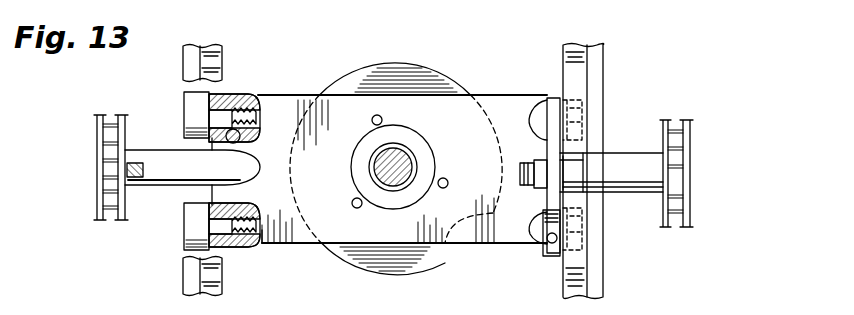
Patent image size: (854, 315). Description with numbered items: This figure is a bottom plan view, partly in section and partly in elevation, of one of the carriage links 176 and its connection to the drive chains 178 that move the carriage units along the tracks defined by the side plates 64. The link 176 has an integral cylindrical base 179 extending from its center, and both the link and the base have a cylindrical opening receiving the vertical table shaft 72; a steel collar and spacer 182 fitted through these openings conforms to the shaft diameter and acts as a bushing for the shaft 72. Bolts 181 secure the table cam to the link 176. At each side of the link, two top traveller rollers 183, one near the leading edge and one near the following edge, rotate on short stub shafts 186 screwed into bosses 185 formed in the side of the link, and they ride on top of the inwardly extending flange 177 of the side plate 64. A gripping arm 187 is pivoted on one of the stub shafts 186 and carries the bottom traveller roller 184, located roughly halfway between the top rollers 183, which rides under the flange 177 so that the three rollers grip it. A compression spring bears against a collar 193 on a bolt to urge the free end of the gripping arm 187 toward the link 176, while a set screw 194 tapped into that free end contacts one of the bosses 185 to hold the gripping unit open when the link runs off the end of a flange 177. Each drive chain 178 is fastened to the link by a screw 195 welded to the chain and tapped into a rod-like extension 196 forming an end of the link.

The side plate 64 is at (184, 69).
The vertical shaft 72 is at (432, 165).
The carriage link 176 is at (497, 95).
The flange 177 is at (222, 56).
The drive chain 178 is at (97, 147).
The cylindrical base 179 is at (351, 165).
The bolt 181 is at (384, 117).
The collar and spacer 182 is at (407, 166).
The top traveller roller 183 is at (186, 111).
The bottom traveller roller 184 is at (577, 172).
The boss 185 is at (530, 115).
The stub shaft 186 is at (220, 96).
The gripping arm 187 is at (263, 100).
The collar 193 is at (552, 210).
The set screw 194 is at (549, 256).
The screw 195 is at (127, 170).
The rod-like extension 196 is at (157, 153).